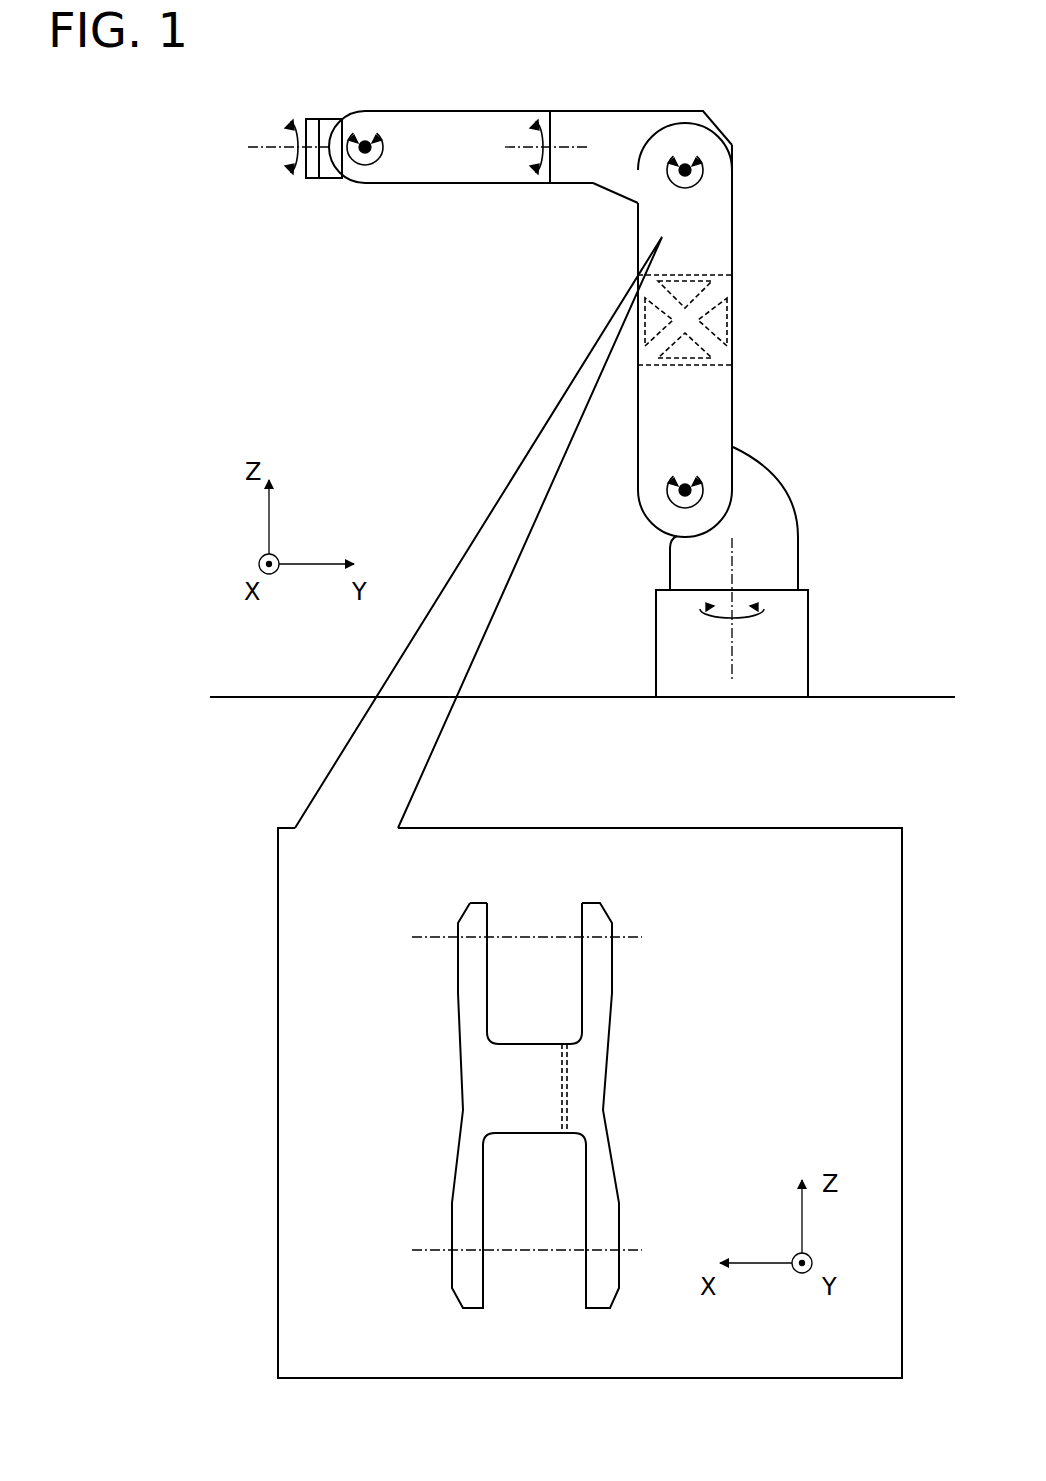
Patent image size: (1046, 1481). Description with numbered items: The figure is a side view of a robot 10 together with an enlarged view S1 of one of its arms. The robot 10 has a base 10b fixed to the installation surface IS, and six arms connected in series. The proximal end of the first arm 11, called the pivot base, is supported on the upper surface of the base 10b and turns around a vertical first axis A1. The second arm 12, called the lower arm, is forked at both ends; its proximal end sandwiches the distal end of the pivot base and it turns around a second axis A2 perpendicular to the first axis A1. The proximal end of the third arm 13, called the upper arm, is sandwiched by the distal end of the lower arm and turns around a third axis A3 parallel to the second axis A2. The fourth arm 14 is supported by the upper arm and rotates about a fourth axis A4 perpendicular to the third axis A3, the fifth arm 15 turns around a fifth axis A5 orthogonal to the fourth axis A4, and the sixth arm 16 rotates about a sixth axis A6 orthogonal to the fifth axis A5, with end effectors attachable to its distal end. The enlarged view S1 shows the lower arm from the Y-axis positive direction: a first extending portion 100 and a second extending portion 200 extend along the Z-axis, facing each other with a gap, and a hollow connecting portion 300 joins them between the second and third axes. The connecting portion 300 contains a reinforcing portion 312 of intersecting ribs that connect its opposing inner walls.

The robot 10 is at (772, 103).
The base 10b is at (677, 650).
The first arm 11 is at (765, 527).
The second arm 12 is at (708, 390).
The third arm 13 is at (603, 165).
The fourth arm 14 is at (448, 163).
The fifth arm 15 is at (327, 167).
The sixth arm 16 is at (310, 165).
The reinforcing portion 312 is at (745, 302).
The first extending portion 100 is at (624, 1160).
The second extending portion 200 is at (450, 1166).
The connecting portion 300 is at (543, 1023).
The first axis A1 is at (740, 643).
The second axis A2 is at (693, 492).
The third axis A3 is at (695, 172).
The fourth axis A4 is at (548, 143).
The fifth axis A5 is at (365, 140).
The sixth axis A6 is at (266, 143).
The enlarged view S1 is at (718, 827).
The installation surface IS is at (870, 697).